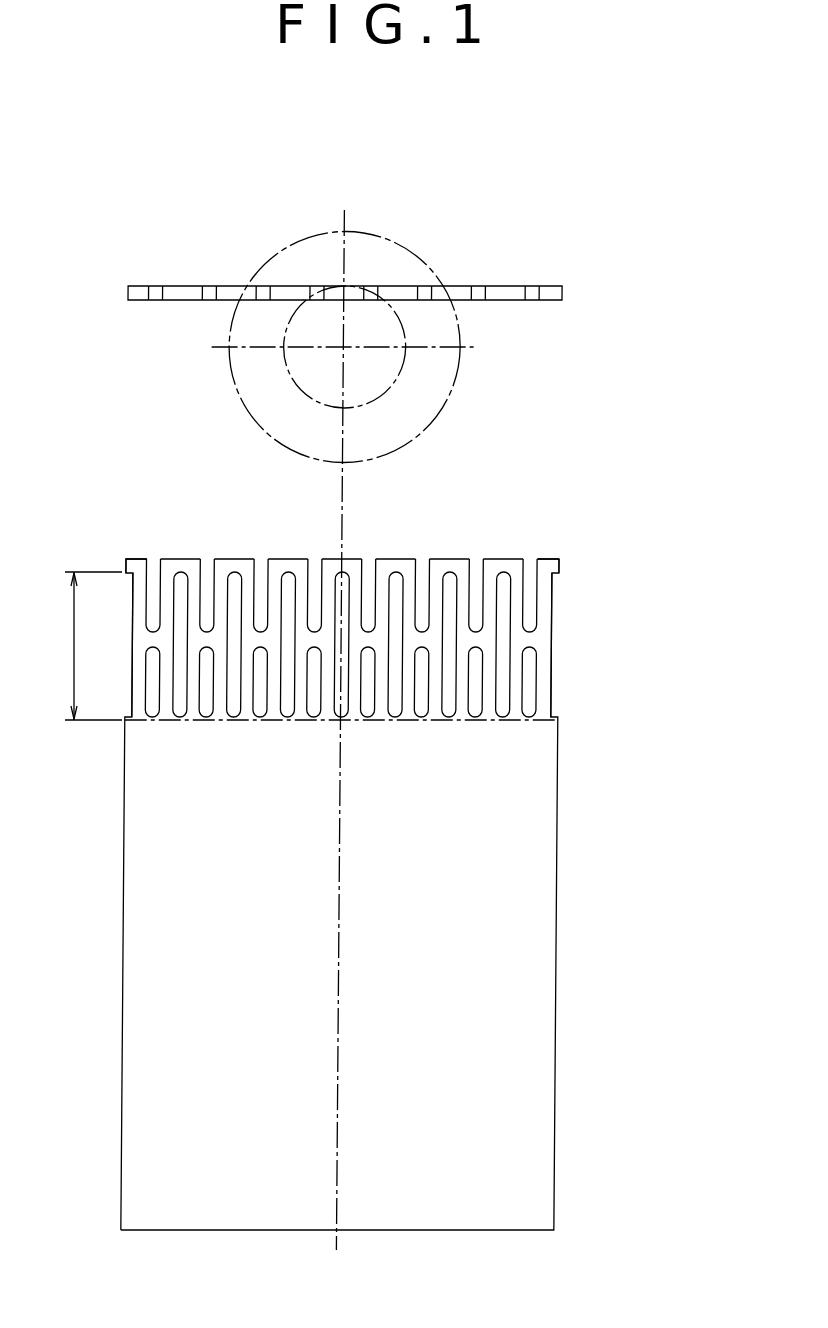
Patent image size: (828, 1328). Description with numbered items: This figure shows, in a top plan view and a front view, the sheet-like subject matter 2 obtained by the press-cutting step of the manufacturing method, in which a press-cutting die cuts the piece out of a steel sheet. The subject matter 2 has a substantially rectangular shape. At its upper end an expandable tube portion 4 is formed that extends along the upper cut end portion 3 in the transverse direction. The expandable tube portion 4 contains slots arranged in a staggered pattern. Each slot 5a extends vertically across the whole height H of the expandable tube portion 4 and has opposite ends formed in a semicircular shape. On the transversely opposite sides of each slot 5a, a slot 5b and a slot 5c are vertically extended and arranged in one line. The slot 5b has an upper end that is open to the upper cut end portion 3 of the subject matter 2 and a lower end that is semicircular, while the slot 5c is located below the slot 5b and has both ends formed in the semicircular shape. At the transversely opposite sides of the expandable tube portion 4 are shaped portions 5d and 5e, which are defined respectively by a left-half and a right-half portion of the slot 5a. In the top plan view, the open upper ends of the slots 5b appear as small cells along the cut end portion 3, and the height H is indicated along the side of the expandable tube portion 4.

The subject matter 2 is at (614, 687).
The upper cut end portion 3 is at (185, 301).
The expandable tube portion 4 is at (557, 545).
The slot 5a is at (237, 568).
The slot 5b is at (206, 286).
The slot 5c is at (150, 720).
The shaped portion 5d is at (133, 600).
The shaped portion 5e is at (552, 603).
The height H is at (72, 645).